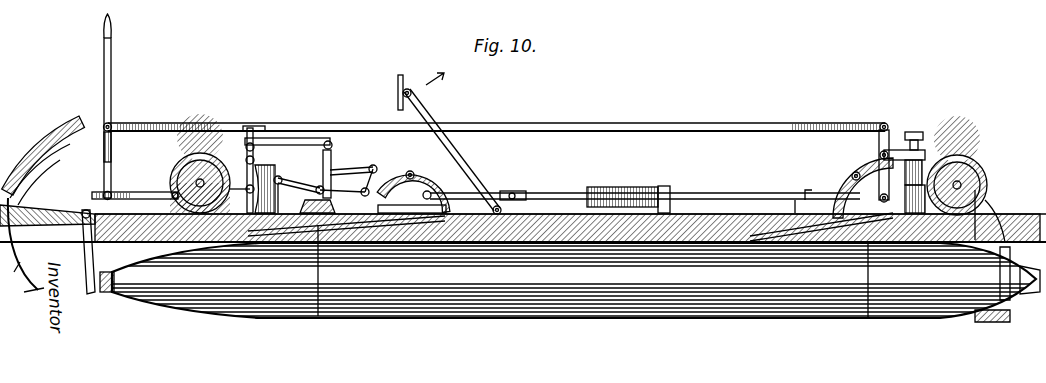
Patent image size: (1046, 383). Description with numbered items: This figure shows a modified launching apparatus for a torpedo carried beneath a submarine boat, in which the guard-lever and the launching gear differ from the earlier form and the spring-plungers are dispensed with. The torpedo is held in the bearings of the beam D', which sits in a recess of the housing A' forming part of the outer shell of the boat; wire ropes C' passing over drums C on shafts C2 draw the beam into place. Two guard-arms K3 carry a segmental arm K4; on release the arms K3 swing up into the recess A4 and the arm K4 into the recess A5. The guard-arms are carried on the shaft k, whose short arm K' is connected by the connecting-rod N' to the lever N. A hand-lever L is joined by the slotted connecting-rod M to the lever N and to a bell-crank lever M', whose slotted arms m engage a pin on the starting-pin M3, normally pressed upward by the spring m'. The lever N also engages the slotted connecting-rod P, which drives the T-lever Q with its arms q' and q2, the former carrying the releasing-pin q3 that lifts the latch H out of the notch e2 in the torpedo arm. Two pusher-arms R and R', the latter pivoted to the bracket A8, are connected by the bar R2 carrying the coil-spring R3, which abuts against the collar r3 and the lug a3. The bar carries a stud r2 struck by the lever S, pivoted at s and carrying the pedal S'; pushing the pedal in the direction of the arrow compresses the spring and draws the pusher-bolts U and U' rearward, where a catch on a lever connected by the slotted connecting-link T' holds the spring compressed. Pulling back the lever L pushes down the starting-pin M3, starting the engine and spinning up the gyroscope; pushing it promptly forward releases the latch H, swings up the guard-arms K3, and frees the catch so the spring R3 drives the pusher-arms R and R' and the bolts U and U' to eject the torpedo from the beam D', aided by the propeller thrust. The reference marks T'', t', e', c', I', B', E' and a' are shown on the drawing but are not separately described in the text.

The recess A5 is at (31, 143).
The recess A4 is at (57, 230).
The segmental arm K4 is at (22, 279).
The guard-arms K3 is at (84, 285).
The short arm K' is at (80, 172).
The hand-lever L is at (112, 92).
The shaft k is at (109, 192).
The drums C is at (591, 155).
The shafts C2 is at (201, 180).
The wire ropes C' is at (563, 225).
The connecting-rod N' is at (187, 180).
The lever N is at (235, 170).
The connecting-rod P is at (300, 140).
The T-lever Q is at (340, 160).
The link T'' is at (377, 132).
The arm q' is at (289, 179).
The pivot q is at (327, 181).
The arm q2 is at (369, 185).
The connecting-link T' is at (346, 182).
The pivot t' is at (411, 170).
The housing A' is at (434, 167).
The pedal S' is at (413, 77).
The lever S is at (452, 143).
The connecting-rod M is at (498, 116).
The pusher-bolt U is at (413, 192).
The pusher-arm R is at (645, 187).
The pivot s is at (507, 191).
The stud r2 is at (518, 192).
The bar R2 is at (552, 193).
The collar r3 is at (600, 188).
The coil-spring R3 is at (672, 180).
The lug a3 is at (682, 194).
The bracket e' is at (797, 186).
The pusher-bolt U' is at (849, 188).
The pusher-arm R' is at (877, 147).
The bracket A8 is at (845, 185).
The bell-crank lever M' is at (904, 129).
The starting-pin M3 is at (923, 148).
The slotted arms m is at (935, 144).
The spring m' is at (881, 177).
The releasing-pin q3 is at (262, 240).
The latch H is at (298, 228).
The notch e2 is at (305, 285).
The rod c' is at (345, 253).
The compartment I' is at (435, 270).
The torpedo hull B' is at (570, 273).
The beam D' is at (660, 253).
The compartment E' is at (761, 258).
The rod a' is at (847, 261).